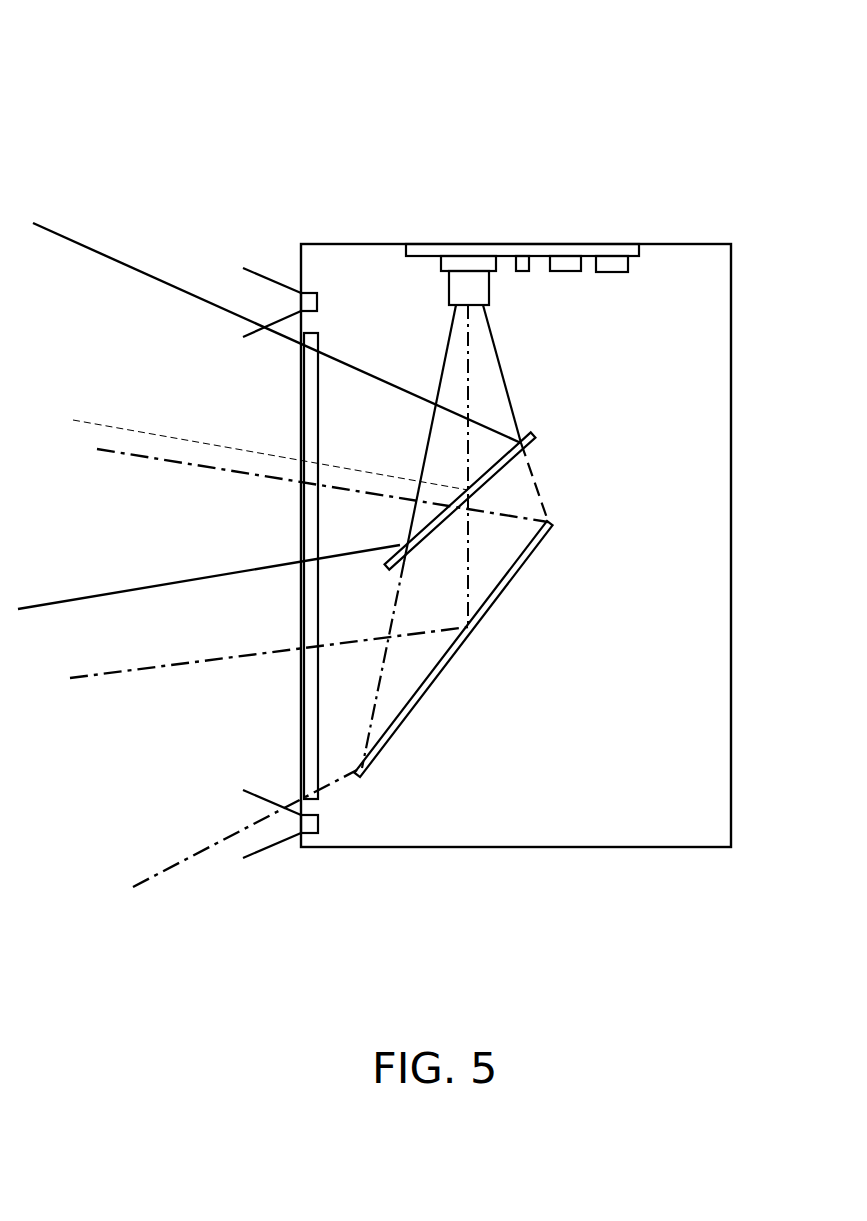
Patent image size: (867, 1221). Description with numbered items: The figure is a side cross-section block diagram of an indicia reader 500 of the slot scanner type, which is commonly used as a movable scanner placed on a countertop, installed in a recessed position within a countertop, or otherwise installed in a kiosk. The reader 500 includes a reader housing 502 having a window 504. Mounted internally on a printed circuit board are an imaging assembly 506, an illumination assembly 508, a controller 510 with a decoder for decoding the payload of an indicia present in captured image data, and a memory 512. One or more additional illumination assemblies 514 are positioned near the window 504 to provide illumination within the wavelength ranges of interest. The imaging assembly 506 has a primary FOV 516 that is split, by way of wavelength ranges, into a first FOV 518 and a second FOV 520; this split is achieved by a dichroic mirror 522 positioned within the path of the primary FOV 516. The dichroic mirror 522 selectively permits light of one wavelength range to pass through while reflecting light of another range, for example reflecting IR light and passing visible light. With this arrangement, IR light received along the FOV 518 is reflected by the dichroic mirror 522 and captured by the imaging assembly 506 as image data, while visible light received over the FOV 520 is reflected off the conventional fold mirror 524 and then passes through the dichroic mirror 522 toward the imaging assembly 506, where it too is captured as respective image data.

The indicia reader 500 is at (128, 56).
The reader housing 502 is at (731, 365).
The window 504 is at (318, 790).
The imaging assembly 506 is at (460, 282).
The illumination assembly 508 is at (520, 262).
The controller 510 is at (563, 263).
The memory 512 is at (625, 263).
The illumination assemblies 514 is at (317, 300).
The primary FOV 516 is at (520, 332).
The FOV 518 is at (42, 600).
The FOV 520 is at (155, 457).
The dichroic mirror 522 is at (533, 435).
The fold mirror 524 is at (510, 578).